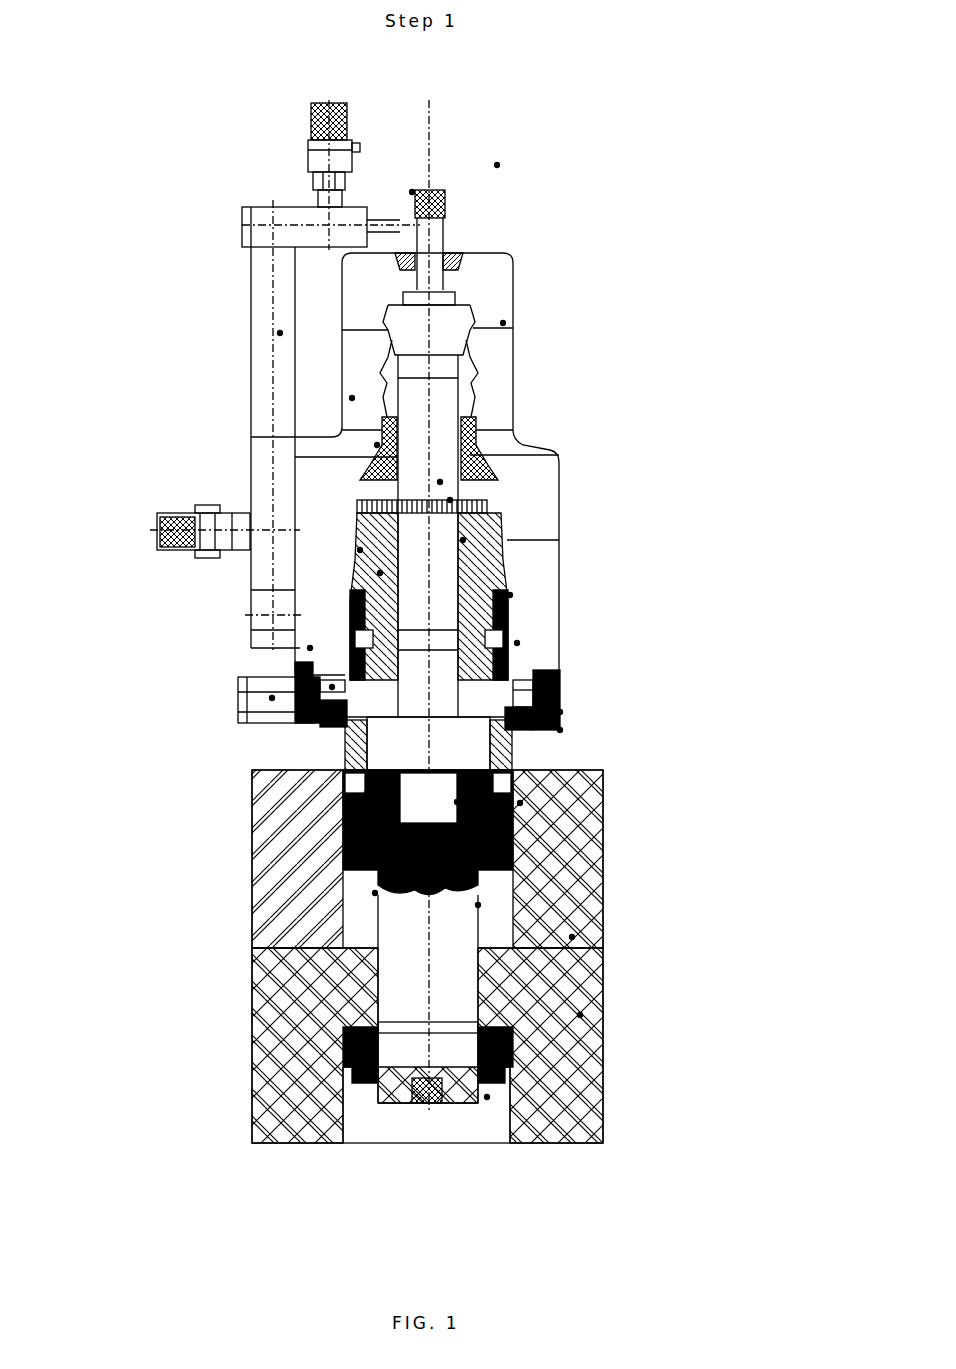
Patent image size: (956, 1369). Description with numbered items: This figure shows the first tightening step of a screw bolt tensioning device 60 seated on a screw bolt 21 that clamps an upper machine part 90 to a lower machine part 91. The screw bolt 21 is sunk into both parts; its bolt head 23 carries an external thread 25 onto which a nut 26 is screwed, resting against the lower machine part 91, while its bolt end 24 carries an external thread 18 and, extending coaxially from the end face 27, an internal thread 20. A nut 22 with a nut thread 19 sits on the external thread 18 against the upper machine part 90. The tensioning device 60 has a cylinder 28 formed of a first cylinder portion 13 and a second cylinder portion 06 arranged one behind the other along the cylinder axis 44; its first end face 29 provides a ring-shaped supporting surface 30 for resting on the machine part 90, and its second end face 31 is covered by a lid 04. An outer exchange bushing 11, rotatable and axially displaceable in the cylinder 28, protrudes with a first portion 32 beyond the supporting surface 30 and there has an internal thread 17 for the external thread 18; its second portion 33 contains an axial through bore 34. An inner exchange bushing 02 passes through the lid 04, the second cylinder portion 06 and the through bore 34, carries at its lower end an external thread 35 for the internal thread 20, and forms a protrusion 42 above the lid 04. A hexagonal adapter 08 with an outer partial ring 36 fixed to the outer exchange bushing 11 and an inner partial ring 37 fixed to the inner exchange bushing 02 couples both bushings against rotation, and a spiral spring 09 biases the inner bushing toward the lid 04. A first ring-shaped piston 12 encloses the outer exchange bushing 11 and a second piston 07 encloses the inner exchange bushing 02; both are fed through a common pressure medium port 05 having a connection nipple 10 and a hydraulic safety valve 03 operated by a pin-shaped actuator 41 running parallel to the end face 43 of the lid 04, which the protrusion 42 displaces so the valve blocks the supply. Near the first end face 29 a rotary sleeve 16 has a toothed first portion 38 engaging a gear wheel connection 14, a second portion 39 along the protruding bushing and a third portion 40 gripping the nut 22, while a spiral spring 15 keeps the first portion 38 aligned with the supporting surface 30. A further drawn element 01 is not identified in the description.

The upper fitting 01 is at (329, 135).
The inner exchange bushing 02 is at (412, 192).
The actuator 41 is at (315, 198).
The hydraulic safety valve 03 is at (395, 225).
The lid 04 is at (347, 290).
The pressure medium port 05 is at (280, 333).
The second cylinder portion 06 is at (352, 398).
The second ring-shaped piston 07 is at (377, 445).
The ring-shaped hexagonal adapter 08 is at (393, 503).
The connection nipple 10 is at (158, 522).
The spiral spring 09 is at (360, 550).
The outer exchange bushing 11 is at (380, 573).
The first ring-shaped piston 12 is at (310, 648).
The first cylinder portion 13 is at (272, 698).
The gear wheel connection 14 is at (332, 687).
The spiral spring 15 is at (333, 707).
The rotary sleeve 16 is at (342, 723).
The internal thread 17 is at (367, 793).
The external thread 18 is at (375, 893).
The nut thread 19 is at (457, 802).
The internal thread 20 is at (413, 880).
The screw bolt 21 is at (502, 855).
The nut 22 is at (478, 905).
The screw bolt tensioning device 60 is at (497, 165).
The protrusion 42 is at (452, 222).
The end face 43 is at (503, 250).
The second end face 31 is at (503, 323).
The cylinder 28 is at (523, 372).
The cylinder axis 44 is at (440, 482).
The outer partial ring 36 is at (450, 500).
The inner partial ring 37 is at (779, 405).
The second portion 33 is at (475, 548).
The axial through bore 34 is at (510, 595).
The external thread 35 is at (517, 643).
The first portion 38 is at (540, 682).
The first portion 32 is at (560, 712).
The first end face 29 is at (560, 730).
The supporting surface 30 is at (779, 745).
The second portion 39 is at (522, 752).
The third portion 40 is at (520, 803).
The end face 27 is at (502, 855).
The bolt end 24 is at (415, 878).
The upper machine part 90 is at (572, 937).
The lower machine part 91 is at (580, 1015).
The nut 26 is at (487, 1040).
The external thread 25 is at (487, 1097).
The bolt head 23 is at (423, 1107).